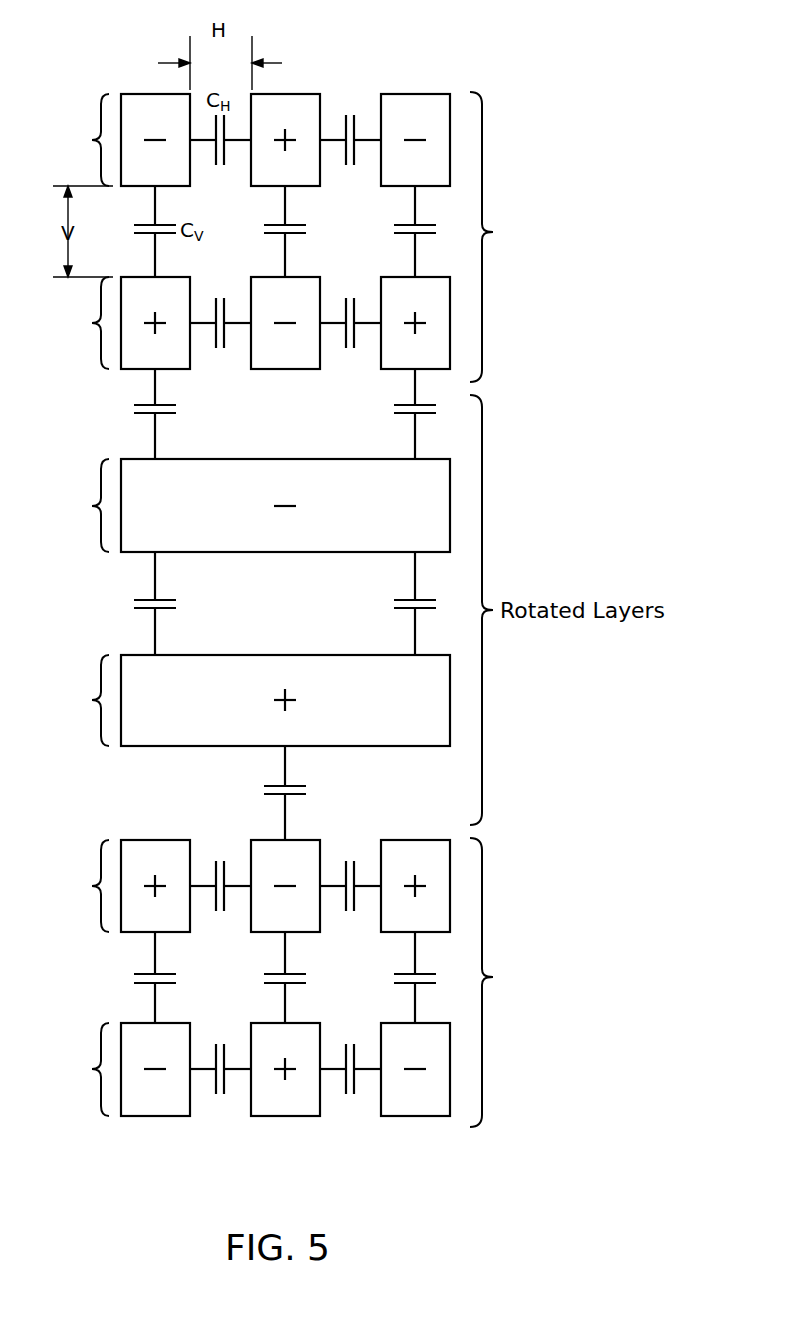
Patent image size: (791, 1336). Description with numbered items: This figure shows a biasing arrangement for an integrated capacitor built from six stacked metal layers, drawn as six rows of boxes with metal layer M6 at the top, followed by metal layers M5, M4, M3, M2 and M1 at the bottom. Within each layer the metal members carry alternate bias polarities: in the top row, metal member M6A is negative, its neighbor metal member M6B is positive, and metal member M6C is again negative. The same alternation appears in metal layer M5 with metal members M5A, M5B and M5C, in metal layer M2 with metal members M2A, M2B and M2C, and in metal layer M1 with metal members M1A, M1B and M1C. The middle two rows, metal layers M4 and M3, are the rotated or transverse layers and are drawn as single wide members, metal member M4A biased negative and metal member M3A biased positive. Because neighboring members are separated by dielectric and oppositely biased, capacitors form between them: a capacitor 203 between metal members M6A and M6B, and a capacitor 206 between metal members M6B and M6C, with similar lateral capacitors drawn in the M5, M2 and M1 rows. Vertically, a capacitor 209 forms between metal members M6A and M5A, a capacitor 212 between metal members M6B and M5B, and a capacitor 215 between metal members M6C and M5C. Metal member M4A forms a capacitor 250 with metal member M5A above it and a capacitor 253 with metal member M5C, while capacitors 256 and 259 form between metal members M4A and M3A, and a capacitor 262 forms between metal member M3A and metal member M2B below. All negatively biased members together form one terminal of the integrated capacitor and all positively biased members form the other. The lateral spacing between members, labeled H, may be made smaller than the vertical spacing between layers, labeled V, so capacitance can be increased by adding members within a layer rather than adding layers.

The capacitor 203 is at (214, 166).
The capacitor 206 is at (355, 113).
The capacitor 209 is at (148, 224).
The capacitor 212 is at (274, 235).
The capacitor 215 is at (407, 224).
The capacitor 250 is at (165, 415).
The capacitor 253 is at (405, 415).
The capacitor 256 is at (165, 610).
The capacitor 259 is at (405, 610).
The capacitor 262 is at (297, 786).
The metal member M6A is at (138, 102).
The metal member M6B is at (285, 100).
The metal member M6C is at (428, 100).
The metal member M5A is at (129, 370).
The metal member M5B is at (287, 370).
The metal member M5C is at (397, 287).
The metal member M4A is at (345, 553).
The metal member M3A is at (288, 655).
The metal member M2A is at (153, 840).
The metal member M2B is at (261, 840).
The metal member M2C is at (416, 840).
The metal member M1A is at (156, 1117).
The metal member M1B is at (287, 1117).
The metal member M1C is at (417, 1117).
The metal layer M6 is at (80, 140).
The metal layer M5 is at (80, 323).
The metal layer M4 is at (80, 505).
The metal layer M3 is at (80, 700).
The metal layer M2 is at (80, 886).
The metal layer M1 is at (80, 1069).